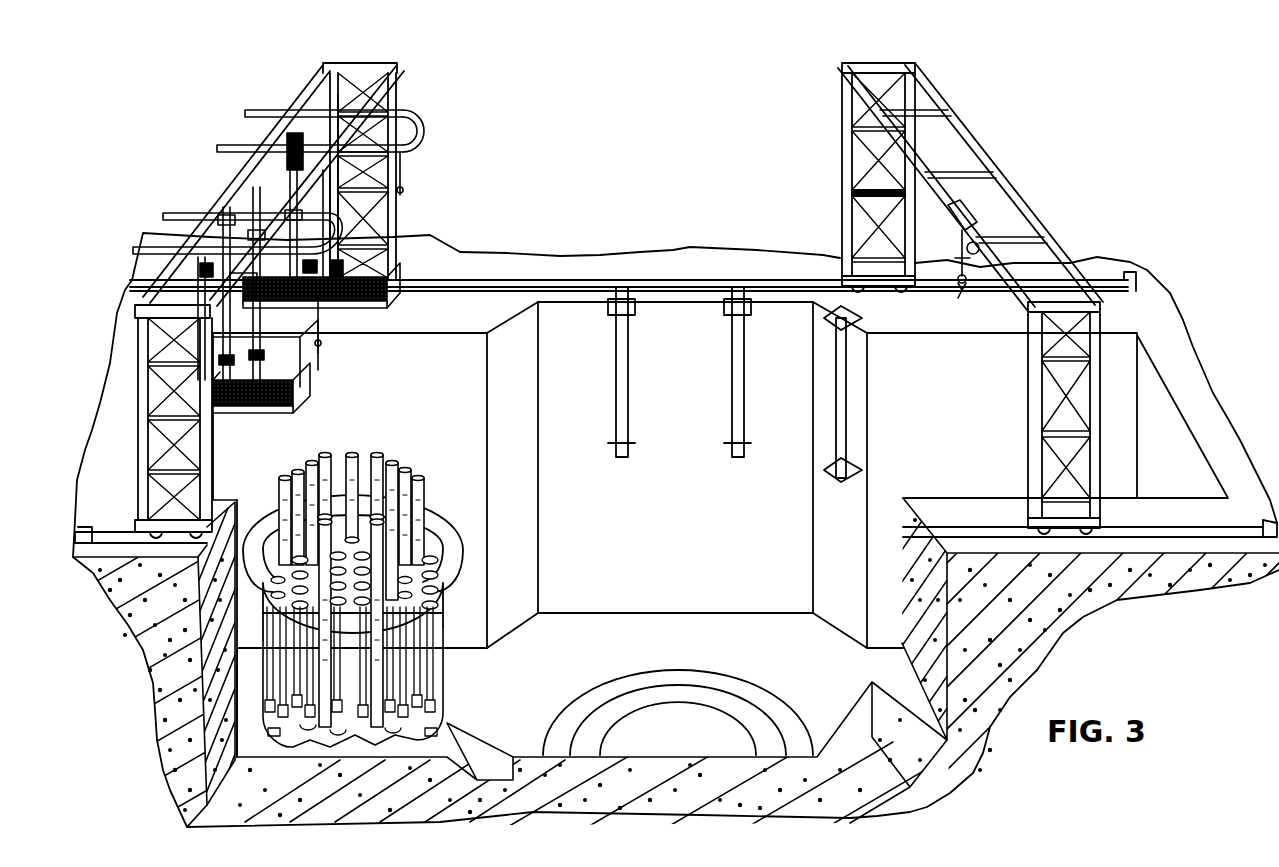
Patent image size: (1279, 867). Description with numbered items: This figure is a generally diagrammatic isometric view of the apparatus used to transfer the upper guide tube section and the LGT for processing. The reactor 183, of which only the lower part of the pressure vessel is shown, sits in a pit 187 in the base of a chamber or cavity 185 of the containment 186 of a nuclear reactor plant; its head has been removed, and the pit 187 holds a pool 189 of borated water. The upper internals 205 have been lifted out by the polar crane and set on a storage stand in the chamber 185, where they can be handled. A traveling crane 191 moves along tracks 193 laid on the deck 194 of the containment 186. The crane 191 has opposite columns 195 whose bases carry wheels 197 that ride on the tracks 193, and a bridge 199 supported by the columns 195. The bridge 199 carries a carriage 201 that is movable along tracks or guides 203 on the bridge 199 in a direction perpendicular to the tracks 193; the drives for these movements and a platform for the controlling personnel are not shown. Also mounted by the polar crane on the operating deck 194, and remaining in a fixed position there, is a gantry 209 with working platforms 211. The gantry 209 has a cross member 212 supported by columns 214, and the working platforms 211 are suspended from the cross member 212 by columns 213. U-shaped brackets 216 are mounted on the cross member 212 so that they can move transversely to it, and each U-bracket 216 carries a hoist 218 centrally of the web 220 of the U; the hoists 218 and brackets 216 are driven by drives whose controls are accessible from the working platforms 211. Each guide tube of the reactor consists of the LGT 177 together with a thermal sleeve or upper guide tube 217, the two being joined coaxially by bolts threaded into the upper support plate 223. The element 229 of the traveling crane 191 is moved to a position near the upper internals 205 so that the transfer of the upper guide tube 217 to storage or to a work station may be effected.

The lower guide tube (LGT) 177 is at (358, 707).
The reactor 183 is at (740, 727).
The chamber or cavity 185 is at (632, 545).
The containment 186 is at (1068, 637).
The pit 187 is at (668, 693).
The pool of borated water 189 is at (567, 387).
The traveling crane 191 is at (1048, 213).
The tracks 193 is at (690, 280).
The deck 194 is at (1190, 512).
The columns 195 is at (842, 119).
The wheels 197 is at (1104, 524).
The bridge 199 is at (1037, 238).
The carriage 201 is at (1017, 198).
The tracks or guides 203 is at (913, 147).
The upper internals 205 is at (258, 636).
The gantry 209 is at (414, 93).
The working platforms 211 is at (397, 268).
The cross member 212 is at (233, 193).
The columns 213 is at (240, 352).
The columns 214 is at (140, 435).
The U-shaped brackets 216 is at (272, 111).
The upper guide tube 217 is at (283, 498).
The hoist 218 is at (320, 327).
The web 220 is at (420, 128).
The upper support plate 223 is at (432, 548).
The component of traveling crane 229 is at (958, 298).